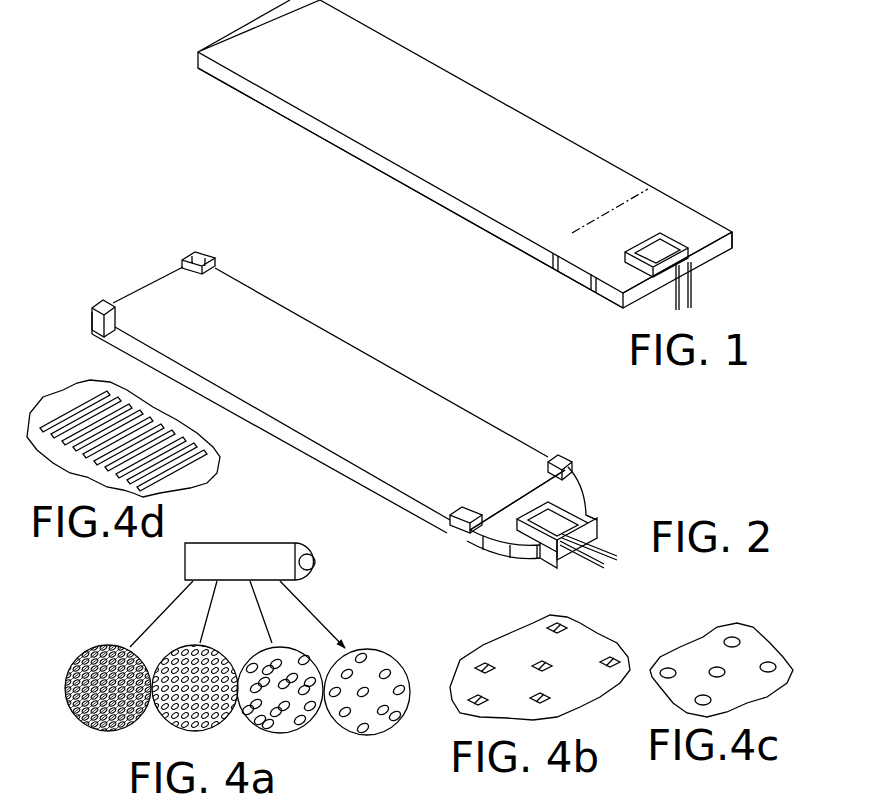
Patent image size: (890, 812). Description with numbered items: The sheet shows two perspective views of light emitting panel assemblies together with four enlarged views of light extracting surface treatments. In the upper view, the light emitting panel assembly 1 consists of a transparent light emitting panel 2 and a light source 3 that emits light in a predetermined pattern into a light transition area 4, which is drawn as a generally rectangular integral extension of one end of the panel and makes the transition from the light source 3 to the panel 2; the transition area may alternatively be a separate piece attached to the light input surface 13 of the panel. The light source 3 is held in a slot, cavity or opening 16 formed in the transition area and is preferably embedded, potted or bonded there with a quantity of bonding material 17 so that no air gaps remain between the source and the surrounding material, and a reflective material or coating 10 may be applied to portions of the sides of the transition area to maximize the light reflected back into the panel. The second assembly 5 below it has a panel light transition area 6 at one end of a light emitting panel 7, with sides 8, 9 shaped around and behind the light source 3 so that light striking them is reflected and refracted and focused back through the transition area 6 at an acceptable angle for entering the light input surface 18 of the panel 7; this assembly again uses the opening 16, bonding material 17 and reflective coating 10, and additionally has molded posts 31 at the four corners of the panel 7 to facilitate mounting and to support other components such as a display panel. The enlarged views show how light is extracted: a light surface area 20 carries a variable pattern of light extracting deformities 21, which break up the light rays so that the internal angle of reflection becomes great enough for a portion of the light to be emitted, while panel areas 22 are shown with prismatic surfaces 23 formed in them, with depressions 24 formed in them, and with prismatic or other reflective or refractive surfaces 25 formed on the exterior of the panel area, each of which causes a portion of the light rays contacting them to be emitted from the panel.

In FIG. 1, the light emitting panel assembly 1 is at (527, 100).
In FIG. 1, the transparent light emitting panel 2 is at (562, 173).
In FIG. 1, the light source 3 is at (665, 252).
In FIG. 2, the light source 3 is at (577, 525).
In FIG. 4A, the light source 3 is at (316, 562).
In FIG. 1, the light transition area 4 is at (675, 215).
In FIG. 2, the light emitting panel assembly 5 is at (357, 343).
In FIG. 2, the panel light transition area 6 is at (577, 493).
In FIG. 4A, the panel light transition area 6 is at (305, 545).
In FIG. 2, the light emitting panel 7 is at (407, 408).
In FIG. 2, the side 8 is at (473, 548).
In FIG. 2, the side 9 is at (585, 505).
In FIG. 1, the reflective material or coating 10 is at (567, 280).
In FIG. 2, the reflective material or coating 10 is at (498, 547).
In FIG. 1, the light input surface 13 is at (572, 233).
In FIG. 1, the slots, cavities or openings 16 is at (723, 225).
In FIG. 2, the slots, cavities or openings 16 is at (533, 505).
In FIG. 1, the embedding, potting or bonding material 17 is at (643, 243).
In FIG. 2, the embedding, potting or bonding material 17 is at (552, 497).
In FIG. 2, the light input surface 18 is at (522, 495).
In FIG. 4A, the light surface area 20 is at (258, 535).
In FIG. 4A, the light extracting deformities 21 is at (97, 650).
In FIG. 4D, the panel area 22 is at (65, 400).
In FIG. 4B, the panel area 22 is at (512, 652).
In FIG. 4C, the panel area 22 is at (707, 652).
In FIG. 4B, the prismatic surfaces 23 is at (563, 623).
In FIG. 4C, the depressions 24 is at (733, 640).
In FIG. 4D, the prismatic or other reflective or refractive surfaces 25 is at (163, 447).
In FIG. 2, the molded posts 31 is at (103, 300).